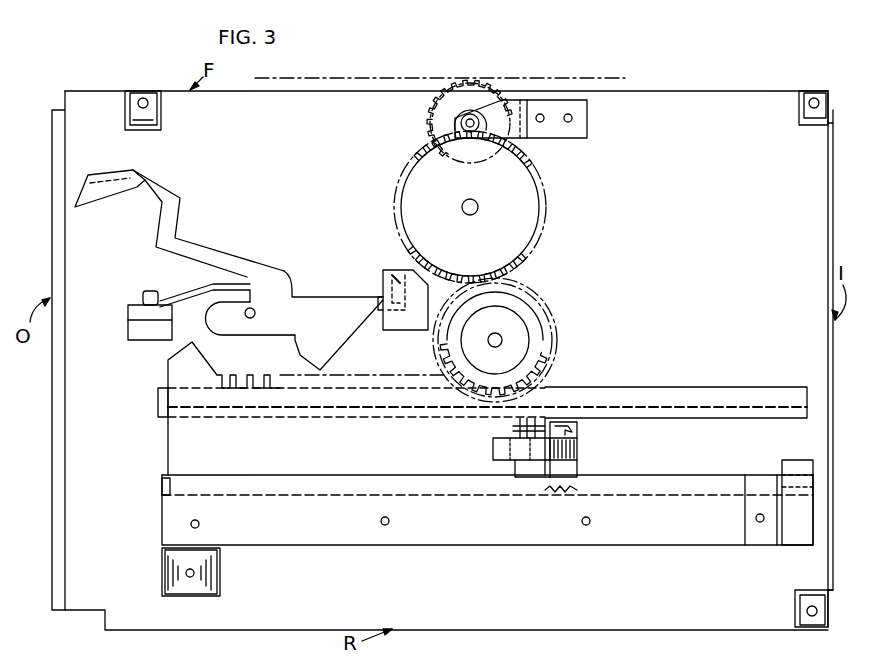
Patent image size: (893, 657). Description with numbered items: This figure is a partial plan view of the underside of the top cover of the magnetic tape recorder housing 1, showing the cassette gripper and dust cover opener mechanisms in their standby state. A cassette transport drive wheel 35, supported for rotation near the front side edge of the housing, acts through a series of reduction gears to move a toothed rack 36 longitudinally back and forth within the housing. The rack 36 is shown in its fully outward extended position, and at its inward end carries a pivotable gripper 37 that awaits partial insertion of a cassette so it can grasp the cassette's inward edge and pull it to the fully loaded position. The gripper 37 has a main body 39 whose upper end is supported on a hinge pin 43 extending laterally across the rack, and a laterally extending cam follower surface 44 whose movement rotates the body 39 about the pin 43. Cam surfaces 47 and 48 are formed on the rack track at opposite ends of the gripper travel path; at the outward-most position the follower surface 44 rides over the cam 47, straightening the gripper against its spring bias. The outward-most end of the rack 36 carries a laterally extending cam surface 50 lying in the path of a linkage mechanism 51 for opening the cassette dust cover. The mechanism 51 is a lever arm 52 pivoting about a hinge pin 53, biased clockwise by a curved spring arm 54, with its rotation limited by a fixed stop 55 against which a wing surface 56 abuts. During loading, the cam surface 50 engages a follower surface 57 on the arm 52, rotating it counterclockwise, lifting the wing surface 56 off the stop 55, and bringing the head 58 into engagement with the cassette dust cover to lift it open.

The recorder housing 1 is at (708, 86).
The cassette transport drive wheel 35 is at (440, 118).
The toothed rack 36 is at (292, 449).
The gripper 37 is at (488, 434).
The gripper main body 39 is at (500, 448).
The hinge pin 43 is at (515, 470).
The cam follower surface 44 is at (570, 468).
The cam surface 47 is at (560, 495).
The cam surface 48 is at (782, 482).
The cam surface 50 is at (175, 365).
The linkage mechanism 51 is at (208, 213).
The lever arm 52 is at (281, 265).
The hinge pin 53 is at (257, 313).
The spring arm 54 is at (155, 276).
The fixed stop 55 is at (405, 330).
The wing surface 56 is at (388, 282).
The follower surface 57 is at (300, 344).
The head 58 is at (97, 212).